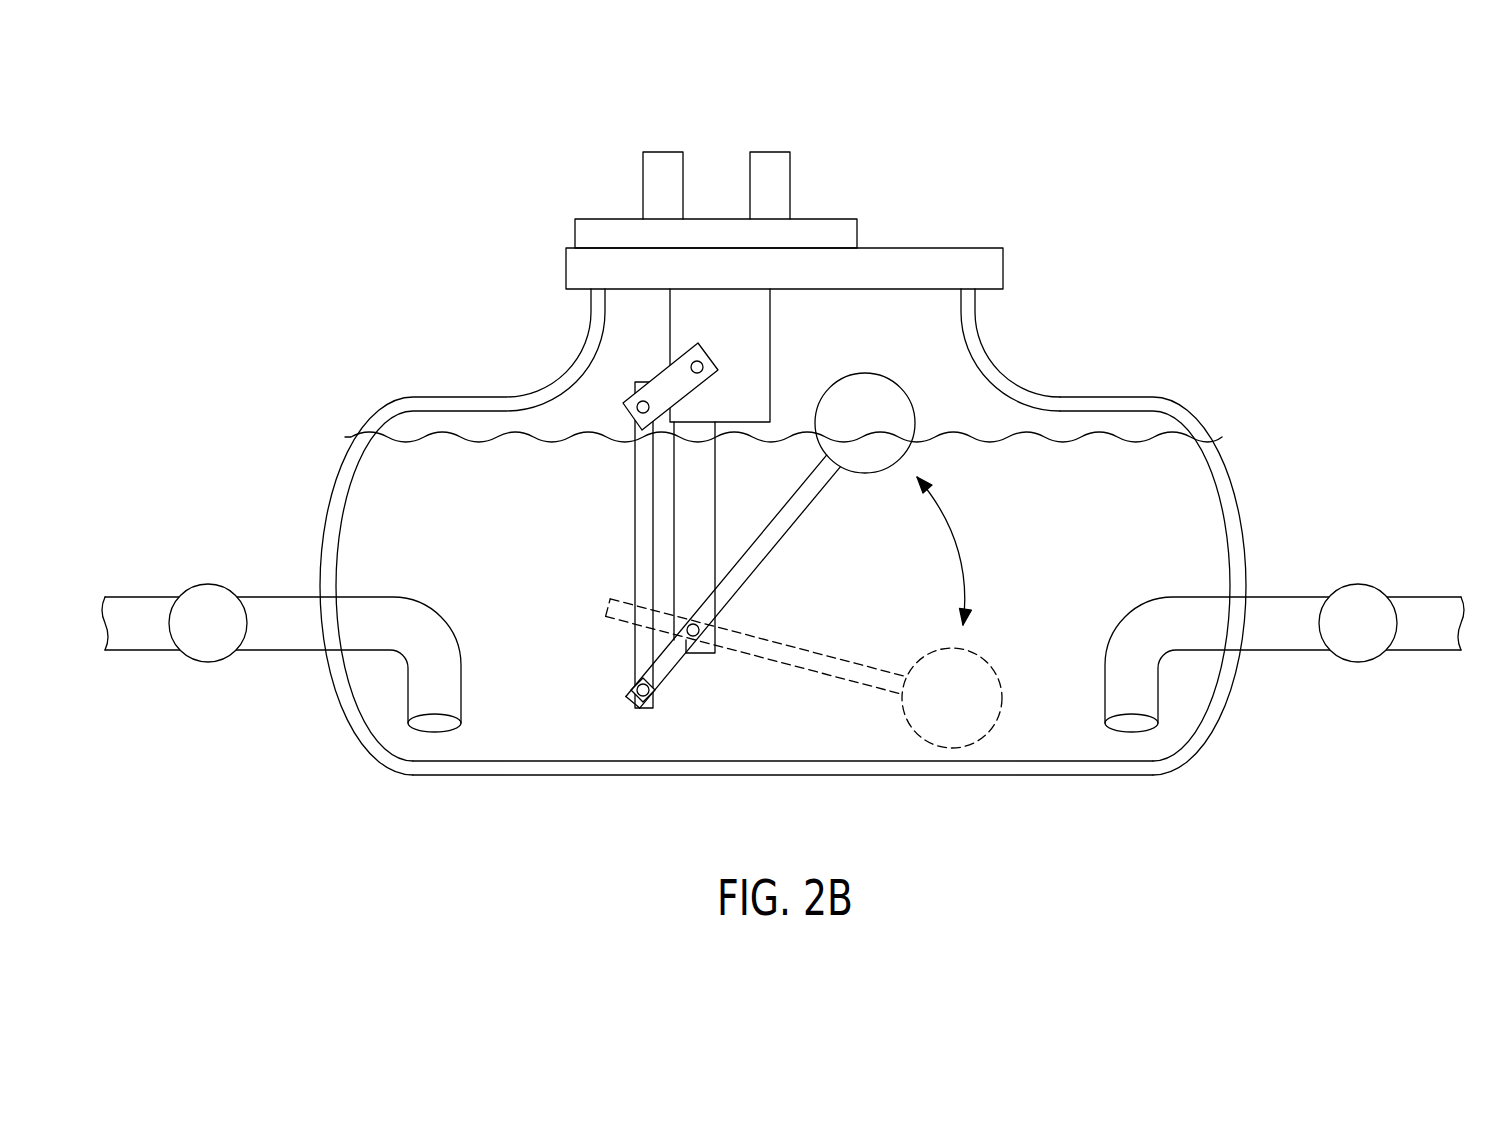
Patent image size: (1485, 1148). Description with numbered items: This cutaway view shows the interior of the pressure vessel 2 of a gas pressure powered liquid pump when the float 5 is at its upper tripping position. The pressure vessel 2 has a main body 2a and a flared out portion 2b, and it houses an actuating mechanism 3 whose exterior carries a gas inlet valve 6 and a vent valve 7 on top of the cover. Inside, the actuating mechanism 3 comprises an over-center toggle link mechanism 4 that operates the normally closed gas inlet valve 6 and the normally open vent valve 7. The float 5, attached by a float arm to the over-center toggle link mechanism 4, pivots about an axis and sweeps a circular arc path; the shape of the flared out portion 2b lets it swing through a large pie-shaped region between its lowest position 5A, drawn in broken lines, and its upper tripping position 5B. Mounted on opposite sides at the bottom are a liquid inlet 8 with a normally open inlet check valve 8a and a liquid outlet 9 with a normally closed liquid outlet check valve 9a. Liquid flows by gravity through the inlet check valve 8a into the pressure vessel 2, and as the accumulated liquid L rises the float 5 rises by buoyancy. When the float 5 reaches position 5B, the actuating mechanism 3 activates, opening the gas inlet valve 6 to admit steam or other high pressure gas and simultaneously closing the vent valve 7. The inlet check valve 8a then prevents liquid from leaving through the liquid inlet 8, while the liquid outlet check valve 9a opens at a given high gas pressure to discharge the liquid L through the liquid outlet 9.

The pressure vessel 2 is at (1186, 362).
The main body 2a is at (574, 777).
The flared out portion 2b is at (1006, 361).
The actuating mechanism 3 is at (566, 202).
The over-center toggle link mechanism 4 is at (602, 650).
The float 5 is at (897, 376).
The lowest position of the float 5A is at (806, 673).
The upper tripping position of the float 5B is at (944, 534).
The gas inlet valve 6 is at (664, 150).
The vent valve 7 is at (771, 150).
The liquid inlet 8 is at (131, 651).
The inlet check valve 8a is at (205, 584).
The liquid outlet 9 is at (1432, 597).
The liquid outlet check valve 9a is at (1357, 585).
The liquid L is at (786, 430).